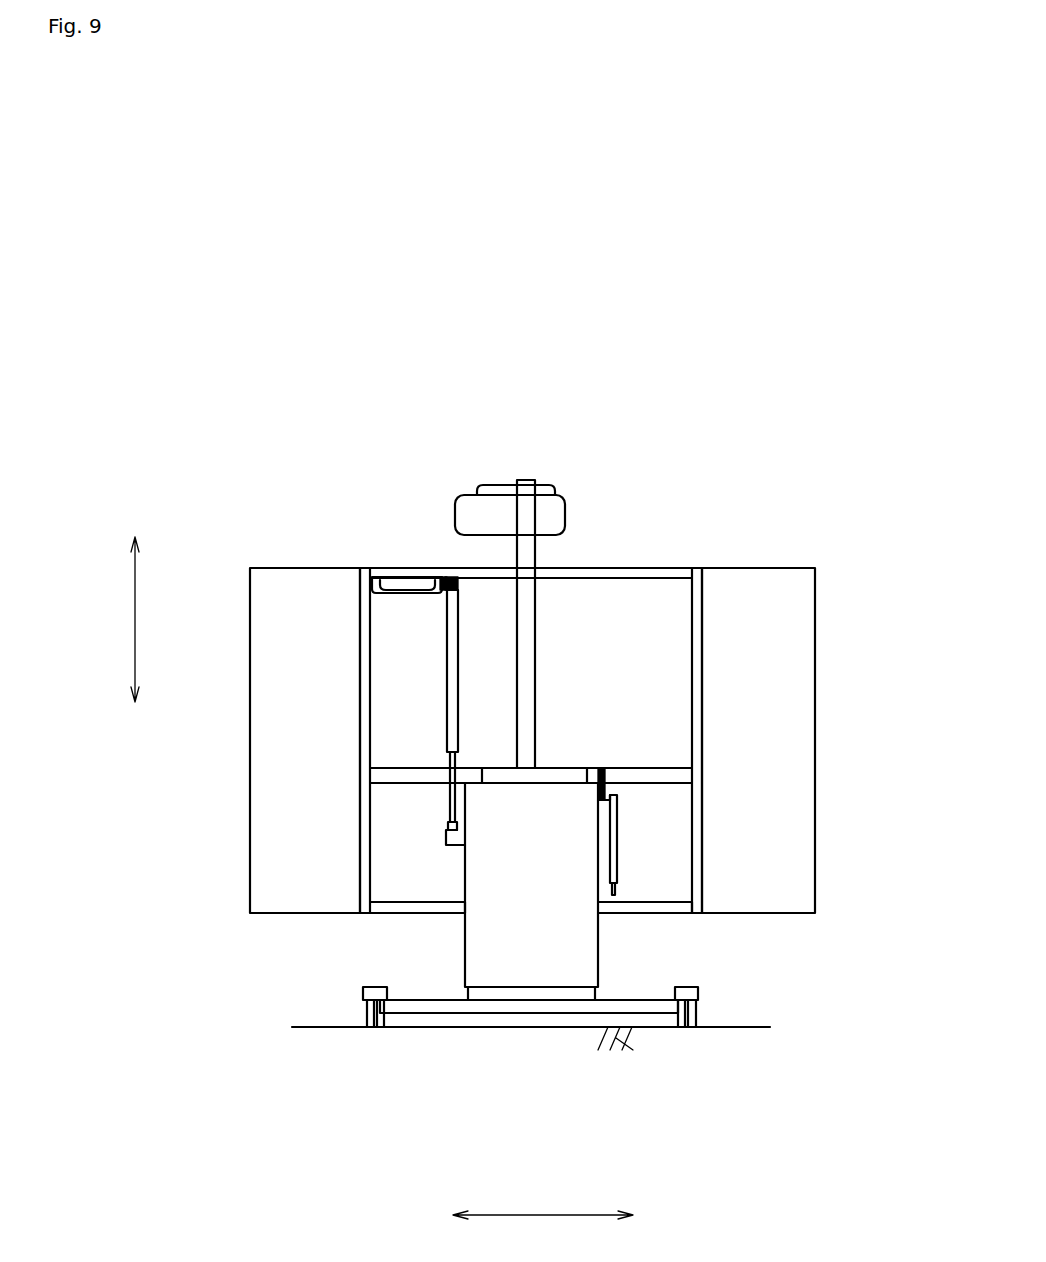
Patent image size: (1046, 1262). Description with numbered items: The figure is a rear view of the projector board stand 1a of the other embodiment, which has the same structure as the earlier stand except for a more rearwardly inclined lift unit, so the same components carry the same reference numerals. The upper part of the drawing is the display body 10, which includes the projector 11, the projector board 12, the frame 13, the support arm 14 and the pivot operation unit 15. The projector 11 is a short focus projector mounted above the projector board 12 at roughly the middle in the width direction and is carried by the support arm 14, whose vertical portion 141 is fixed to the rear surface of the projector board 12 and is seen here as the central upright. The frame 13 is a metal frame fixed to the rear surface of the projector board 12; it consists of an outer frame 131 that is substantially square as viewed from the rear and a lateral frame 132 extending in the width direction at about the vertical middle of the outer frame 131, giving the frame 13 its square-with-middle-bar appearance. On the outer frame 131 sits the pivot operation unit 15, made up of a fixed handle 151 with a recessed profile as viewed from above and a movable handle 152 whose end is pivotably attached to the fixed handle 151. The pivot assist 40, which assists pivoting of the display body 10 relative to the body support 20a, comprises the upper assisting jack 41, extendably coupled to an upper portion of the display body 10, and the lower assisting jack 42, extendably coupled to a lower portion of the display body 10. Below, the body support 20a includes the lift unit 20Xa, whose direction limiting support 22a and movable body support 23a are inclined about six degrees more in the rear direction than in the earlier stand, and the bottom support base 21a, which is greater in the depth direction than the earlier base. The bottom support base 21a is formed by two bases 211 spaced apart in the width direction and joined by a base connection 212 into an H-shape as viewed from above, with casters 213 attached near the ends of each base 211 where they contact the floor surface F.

The projector board stand 1a is at (841, 414).
The display body 10 is at (294, 831).
The projector 11 is at (566, 516).
The projector board 12 is at (795, 607).
The frame 13 is at (637, 723).
The outer frame 131 is at (608, 568).
The lateral frame 132 is at (665, 768).
The support arm 14 is at (466, 611).
The vertical portion 141 is at (527, 520).
The pivot operation unit 15 is at (247, 503).
The fixed handle 151 is at (390, 570).
The movable handle 152 is at (395, 594).
The pivot assist 40 is at (536, 736).
The upper assisting jack 41 is at (445, 688).
The lower assisting jack 42 is at (617, 843).
The body support 20a is at (526, 934).
The lift unit 20Xa is at (661, 961).
The bottom support base 21a is at (220, 976).
The base 211 is at (362, 989).
The base connection 212 is at (400, 1010).
The caster 213 is at (365, 1013).
The direction limiting support 22a is at (483, 995).
The movable body support 23a is at (585, 978).
The floor surface F is at (760, 1027).